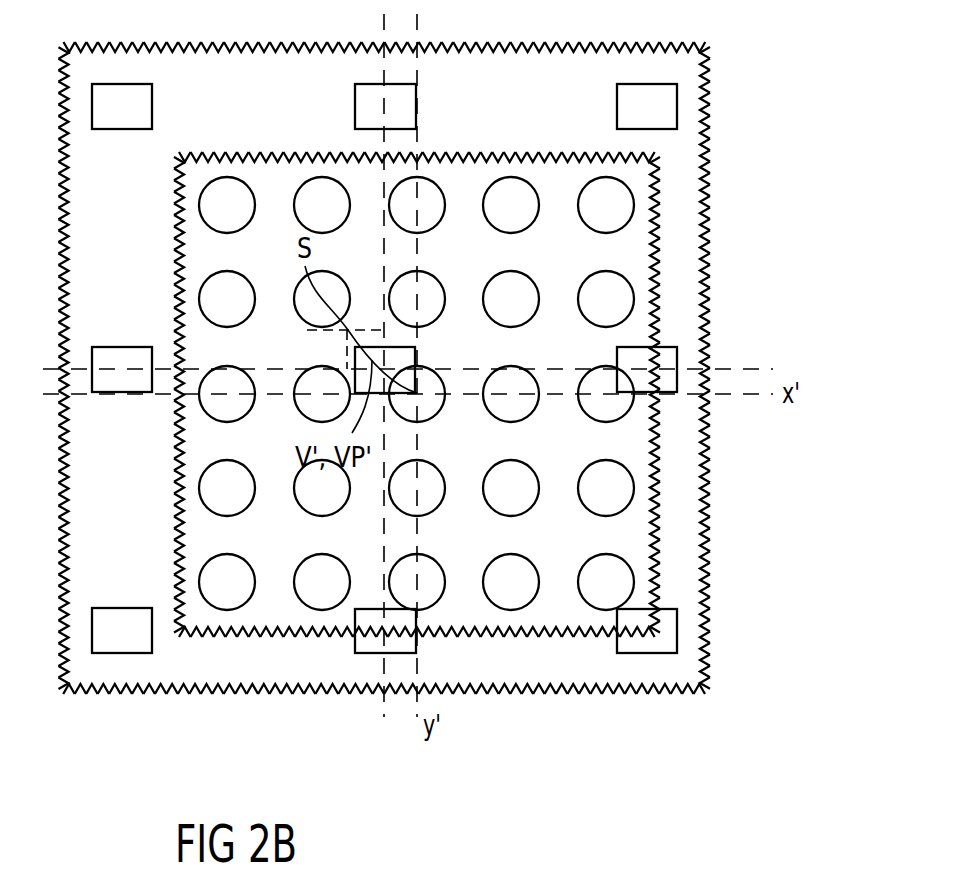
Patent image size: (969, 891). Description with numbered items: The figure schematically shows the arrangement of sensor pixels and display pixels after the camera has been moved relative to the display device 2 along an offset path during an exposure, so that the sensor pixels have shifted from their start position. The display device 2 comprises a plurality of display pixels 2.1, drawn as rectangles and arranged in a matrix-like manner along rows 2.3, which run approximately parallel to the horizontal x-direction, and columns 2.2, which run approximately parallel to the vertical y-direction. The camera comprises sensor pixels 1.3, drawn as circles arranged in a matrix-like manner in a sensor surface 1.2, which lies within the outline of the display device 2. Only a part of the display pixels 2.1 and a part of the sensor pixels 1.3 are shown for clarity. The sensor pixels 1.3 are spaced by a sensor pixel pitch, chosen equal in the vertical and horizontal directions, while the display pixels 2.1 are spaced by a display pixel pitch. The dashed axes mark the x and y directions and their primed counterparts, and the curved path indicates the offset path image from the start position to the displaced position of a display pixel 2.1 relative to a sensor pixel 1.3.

The display device 2 is at (706, 160).
The display pixels 2.1 is at (668, 105).
The sensor surface 1.2 is at (655, 328).
The sensor pixels 1.3 is at (622, 208).
The columns 2.2 is at (373, 388).
The rows 2.3 is at (448, 373).